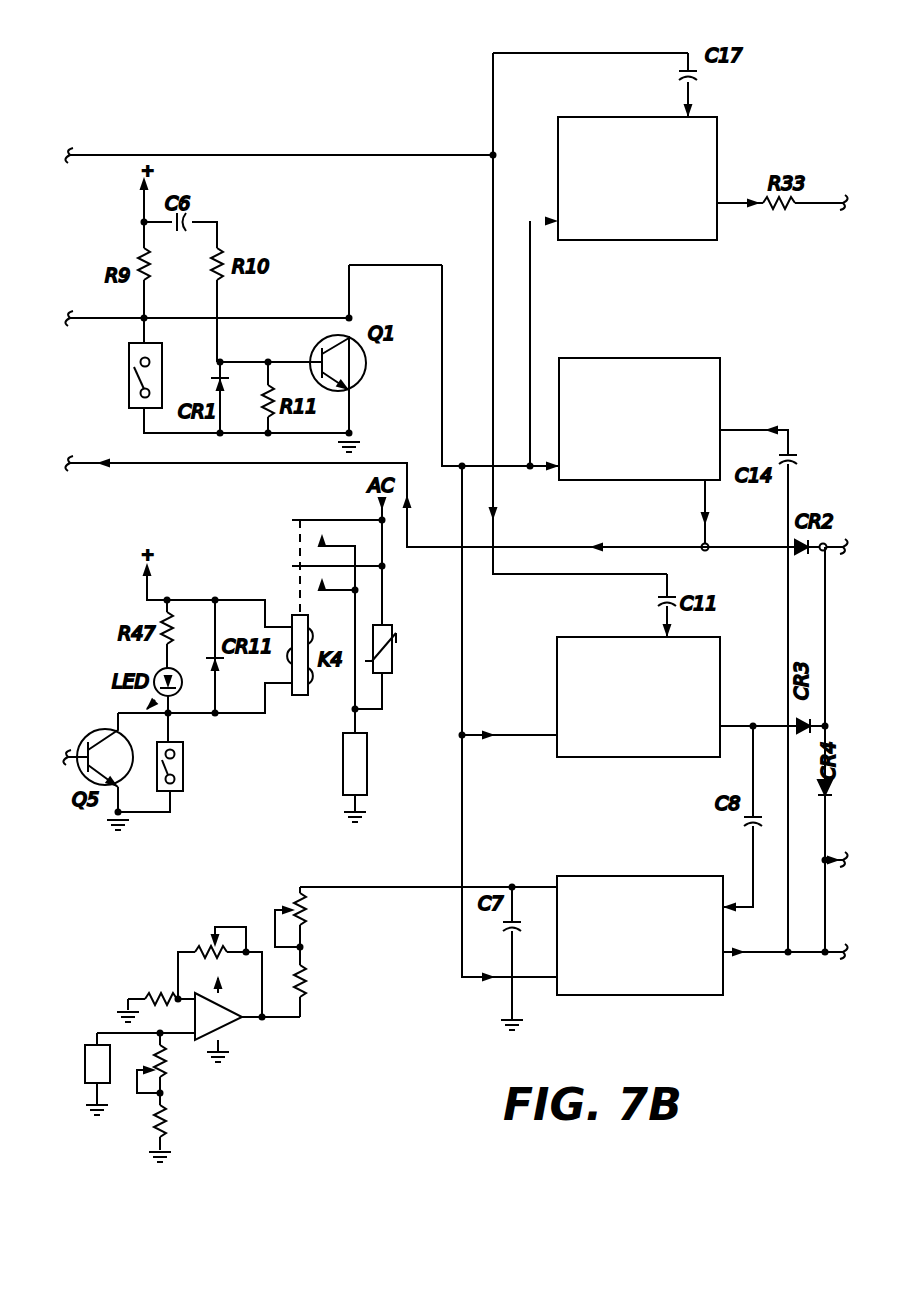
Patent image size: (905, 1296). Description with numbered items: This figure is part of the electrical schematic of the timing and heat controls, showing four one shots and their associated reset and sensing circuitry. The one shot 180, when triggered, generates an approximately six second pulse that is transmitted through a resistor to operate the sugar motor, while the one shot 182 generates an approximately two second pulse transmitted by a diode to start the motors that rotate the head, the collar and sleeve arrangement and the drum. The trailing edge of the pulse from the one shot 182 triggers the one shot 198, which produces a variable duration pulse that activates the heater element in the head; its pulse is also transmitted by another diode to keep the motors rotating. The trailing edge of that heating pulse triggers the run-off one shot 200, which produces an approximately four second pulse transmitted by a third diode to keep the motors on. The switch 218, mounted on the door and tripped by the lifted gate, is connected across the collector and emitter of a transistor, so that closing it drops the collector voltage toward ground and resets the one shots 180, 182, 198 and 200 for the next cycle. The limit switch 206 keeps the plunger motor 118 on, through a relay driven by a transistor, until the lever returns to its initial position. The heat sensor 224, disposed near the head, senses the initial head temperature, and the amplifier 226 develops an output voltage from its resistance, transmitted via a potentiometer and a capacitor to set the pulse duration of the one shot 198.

The one shot 180 is at (628, 117).
The one shot 200 is at (684, 358).
The one shot 182 is at (588, 637).
The one shot 198 is at (636, 876).
The switch 218 is at (126, 388).
The limit switch 206 is at (185, 764).
The plunger motor 118 is at (343, 772).
The amplifier 226 is at (167, 948).
The heat sensor 224 is at (85, 1048).